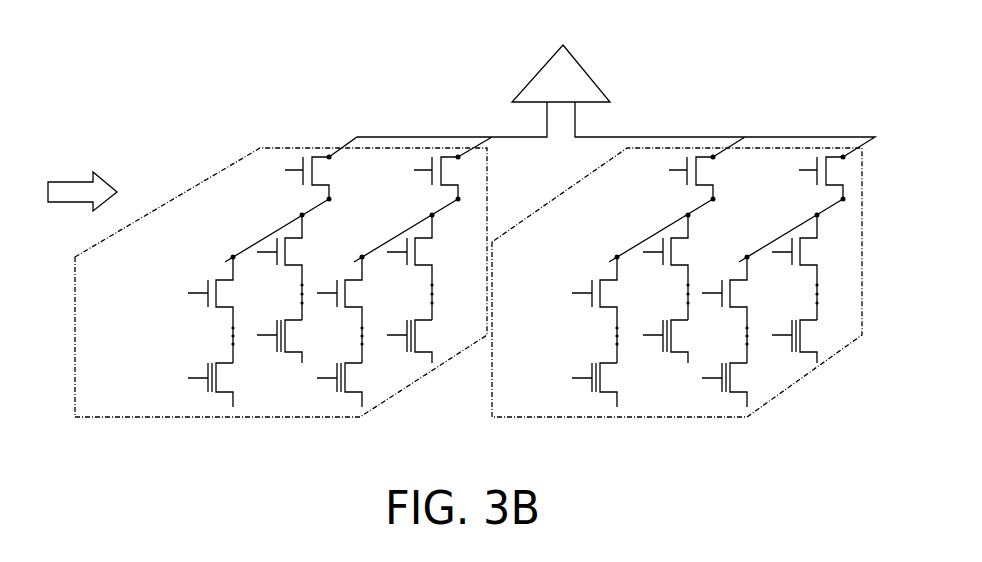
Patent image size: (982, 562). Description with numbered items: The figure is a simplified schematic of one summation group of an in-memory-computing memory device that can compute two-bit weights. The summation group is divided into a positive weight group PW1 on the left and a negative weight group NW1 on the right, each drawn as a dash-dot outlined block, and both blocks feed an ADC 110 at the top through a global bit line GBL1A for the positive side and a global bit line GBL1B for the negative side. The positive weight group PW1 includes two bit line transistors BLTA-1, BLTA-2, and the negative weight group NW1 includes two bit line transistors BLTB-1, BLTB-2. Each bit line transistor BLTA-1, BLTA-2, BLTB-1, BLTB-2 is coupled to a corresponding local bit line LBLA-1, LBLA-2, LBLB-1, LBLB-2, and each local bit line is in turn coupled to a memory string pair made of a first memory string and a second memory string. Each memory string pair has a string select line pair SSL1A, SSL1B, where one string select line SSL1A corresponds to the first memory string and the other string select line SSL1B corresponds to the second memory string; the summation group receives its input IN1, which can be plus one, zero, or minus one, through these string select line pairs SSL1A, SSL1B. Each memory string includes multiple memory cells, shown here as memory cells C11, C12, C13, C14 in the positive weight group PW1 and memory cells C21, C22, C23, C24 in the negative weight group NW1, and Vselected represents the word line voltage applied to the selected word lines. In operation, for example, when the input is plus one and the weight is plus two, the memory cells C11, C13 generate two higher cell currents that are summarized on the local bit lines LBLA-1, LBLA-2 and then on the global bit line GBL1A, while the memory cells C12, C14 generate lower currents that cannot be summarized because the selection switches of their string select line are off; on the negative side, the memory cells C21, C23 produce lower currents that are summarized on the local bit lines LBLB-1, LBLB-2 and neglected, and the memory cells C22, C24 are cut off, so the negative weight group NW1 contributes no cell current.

The ADC 110 is at (539, 72).
The positive weight group PW1 is at (393, 397).
The negative weight group NW1 is at (801, 380).
The input IN1 is at (82, 179).
The global bit line GBL1A is at (438, 129).
The global bit line GBL1B is at (725, 129).
The bit line transistor BLTA-1 is at (276, 178).
The bit line transistor BLTA-2 is at (402, 178).
The bit line transistor BLTB-1 is at (659, 178).
The bit line transistor BLTB-2 is at (788, 178).
The local bit line LBLA-1 is at (290, 222).
The local bit line LBLA-2 is at (420, 222).
The local bit line LBLB-1 is at (662, 230).
The local bit line LBLB-2 is at (800, 225).
The string select line SSL1A is at (427, 310).
The string select line SSL1B is at (491, 267).
The memory cell C11 is at (226, 385).
The memory cell C12 is at (297, 341).
The memory cell C13 is at (355, 385).
The memory cell C14 is at (427, 341).
The memory cell C21 is at (609, 385).
The memory cell C22 is at (681, 341).
The memory cell C23 is at (740, 385).
The memory cell C24 is at (811, 341).
The word line voltage Vselected is at (257, 335).